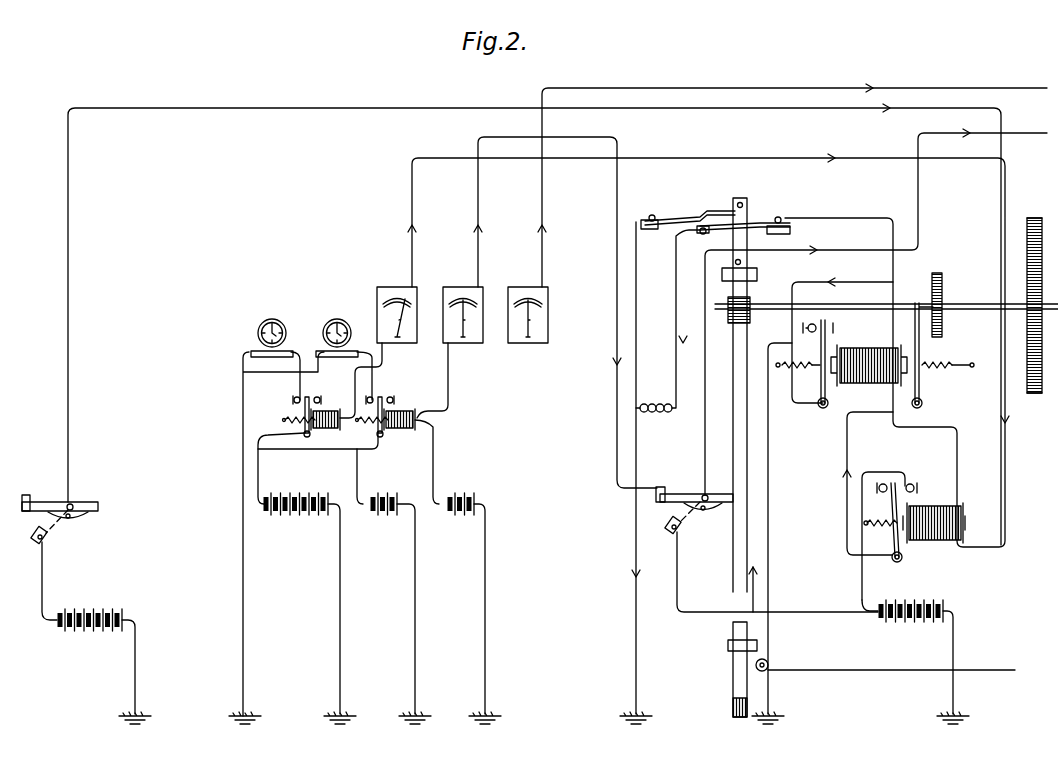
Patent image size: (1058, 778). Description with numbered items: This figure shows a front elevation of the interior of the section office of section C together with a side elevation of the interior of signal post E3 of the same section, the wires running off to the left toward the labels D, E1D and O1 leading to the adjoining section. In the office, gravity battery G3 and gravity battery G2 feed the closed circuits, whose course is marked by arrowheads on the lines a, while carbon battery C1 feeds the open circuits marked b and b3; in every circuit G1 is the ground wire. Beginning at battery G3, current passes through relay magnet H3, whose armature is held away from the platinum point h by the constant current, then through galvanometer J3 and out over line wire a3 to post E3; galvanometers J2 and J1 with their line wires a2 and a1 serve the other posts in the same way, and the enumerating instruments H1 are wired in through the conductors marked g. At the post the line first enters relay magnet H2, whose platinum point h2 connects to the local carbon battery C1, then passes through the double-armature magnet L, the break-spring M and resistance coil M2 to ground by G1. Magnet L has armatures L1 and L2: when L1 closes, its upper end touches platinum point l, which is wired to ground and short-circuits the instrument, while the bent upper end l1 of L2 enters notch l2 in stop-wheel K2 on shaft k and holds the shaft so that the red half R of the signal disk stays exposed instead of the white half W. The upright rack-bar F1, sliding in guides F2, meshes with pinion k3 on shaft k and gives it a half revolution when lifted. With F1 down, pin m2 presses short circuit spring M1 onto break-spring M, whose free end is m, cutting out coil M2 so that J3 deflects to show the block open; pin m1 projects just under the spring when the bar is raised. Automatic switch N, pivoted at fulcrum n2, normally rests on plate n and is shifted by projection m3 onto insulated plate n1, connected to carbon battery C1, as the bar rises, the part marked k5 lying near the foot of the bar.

The conductor b3 is at (534, 316).
The station D is at (88, 78).
The line O' O1 is at (296, 156).
The line E1D is at (100, 237).
The section C is at (728, 60).
The signal post E3 is at (777, 73).
The conductor a1 is at (792, 185).
The conductor a2 is at (760, 312).
The line wire a3 is at (708, 342).
The galvanometer J3 is at (397, 301).
The galvanometer J2 is at (463, 301).
The galvanometer J1 is at (528, 302).
The enumerating instrument H1 is at (301, 517).
The conductor g is at (394, 380).
The relay magnet H3 is at (299, 450).
The plate n is at (337, 457).
The platinum point h is at (377, 397).
The relay magnet H2 is at (611, 498).
The platinum point h2 is at (930, 480).
The closed-circuit line a is at (401, 476).
The carbon battery C1 is at (505, 608).
The gravity battery G3 is at (401, 608).
The battery G2 is at (475, 608).
The ground wire G1 is at (601, 473).
The automatic switch N is at (377, 506).
The fulcrum n2 is at (406, 484).
The plate n1 is at (47, 538).
The short circuit spring M1 is at (699, 217).
The break-spring M is at (762, 226).
The free end of break-spring m is at (690, 231).
The pin m2 is at (742, 203).
The pin m1 is at (741, 263).
The resistance coil M2 is at (668, 321).
The rack-bar F1 is at (733, 410).
The guides F2 is at (757, 274).
The pinion k3 is at (750, 304).
The signal shaft k is at (871, 310).
The projection m3 is at (735, 542).
The roller k5 is at (967, 685).
The open-circuit line b is at (840, 506).
The platinum point l is at (836, 329).
The armature L1 is at (818, 382).
The double-armature electro-magnet L is at (869, 372).
The armature L2 is at (926, 345).
The upper end of armature l1 is at (920, 305).
The stop-wheel K2 is at (944, 287).
The notch l2 is at (944, 315).
The white half of signal disk W is at (1042, 305).
The red half of signal disk R is at (1051, 332).